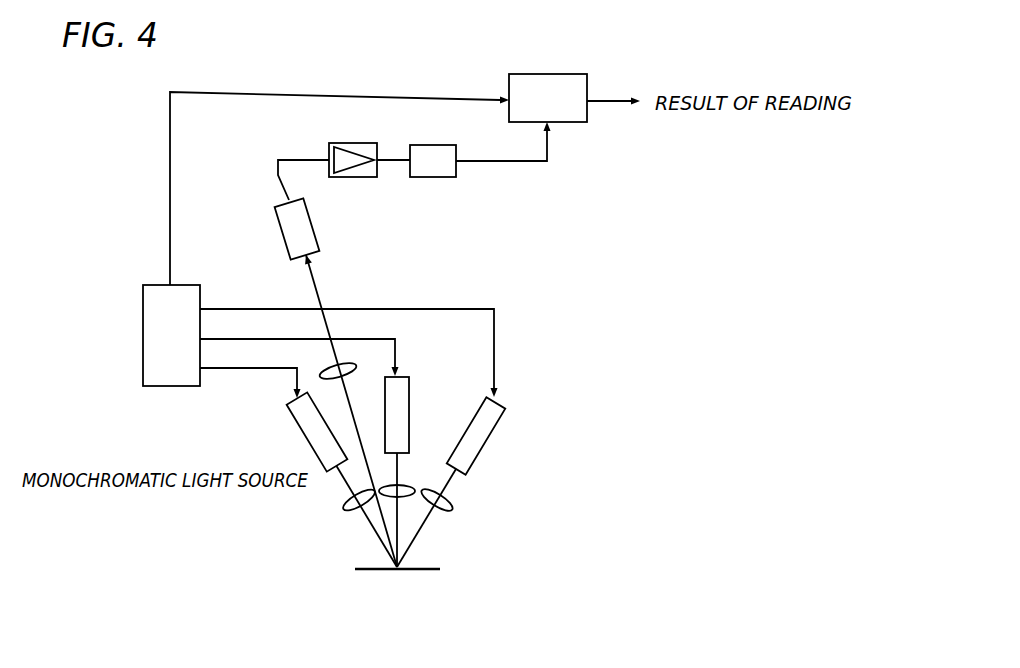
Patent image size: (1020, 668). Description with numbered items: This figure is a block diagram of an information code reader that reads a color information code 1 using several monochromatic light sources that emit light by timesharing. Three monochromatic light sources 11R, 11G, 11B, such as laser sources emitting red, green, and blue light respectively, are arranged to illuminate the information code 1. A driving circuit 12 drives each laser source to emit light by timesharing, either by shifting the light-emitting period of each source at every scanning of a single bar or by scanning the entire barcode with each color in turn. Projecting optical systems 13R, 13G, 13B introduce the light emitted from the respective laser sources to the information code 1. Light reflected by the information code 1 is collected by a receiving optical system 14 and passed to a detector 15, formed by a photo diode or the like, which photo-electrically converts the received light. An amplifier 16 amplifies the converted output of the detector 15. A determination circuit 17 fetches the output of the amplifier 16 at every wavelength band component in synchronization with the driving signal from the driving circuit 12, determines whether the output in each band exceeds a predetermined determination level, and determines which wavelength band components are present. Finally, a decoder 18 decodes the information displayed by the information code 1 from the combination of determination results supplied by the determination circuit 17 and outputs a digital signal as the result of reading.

The information code 1 is at (418, 569).
The monochromatic light source 11R is at (303, 434).
The monochromatic light source 11G is at (409, 410).
The monochromatic light source 11B is at (497, 428).
The driving circuit 12 is at (180, 386).
The projecting optical system 13R is at (343, 500).
The projecting optical system 13G is at (408, 487).
The projecting optical system 13B is at (447, 512).
The receiving optical system 14 is at (347, 371).
The detector 15 is at (275, 221).
The amplifier 16 is at (357, 177).
The determination circuit 17 is at (450, 177).
The decoder 18 is at (575, 122).